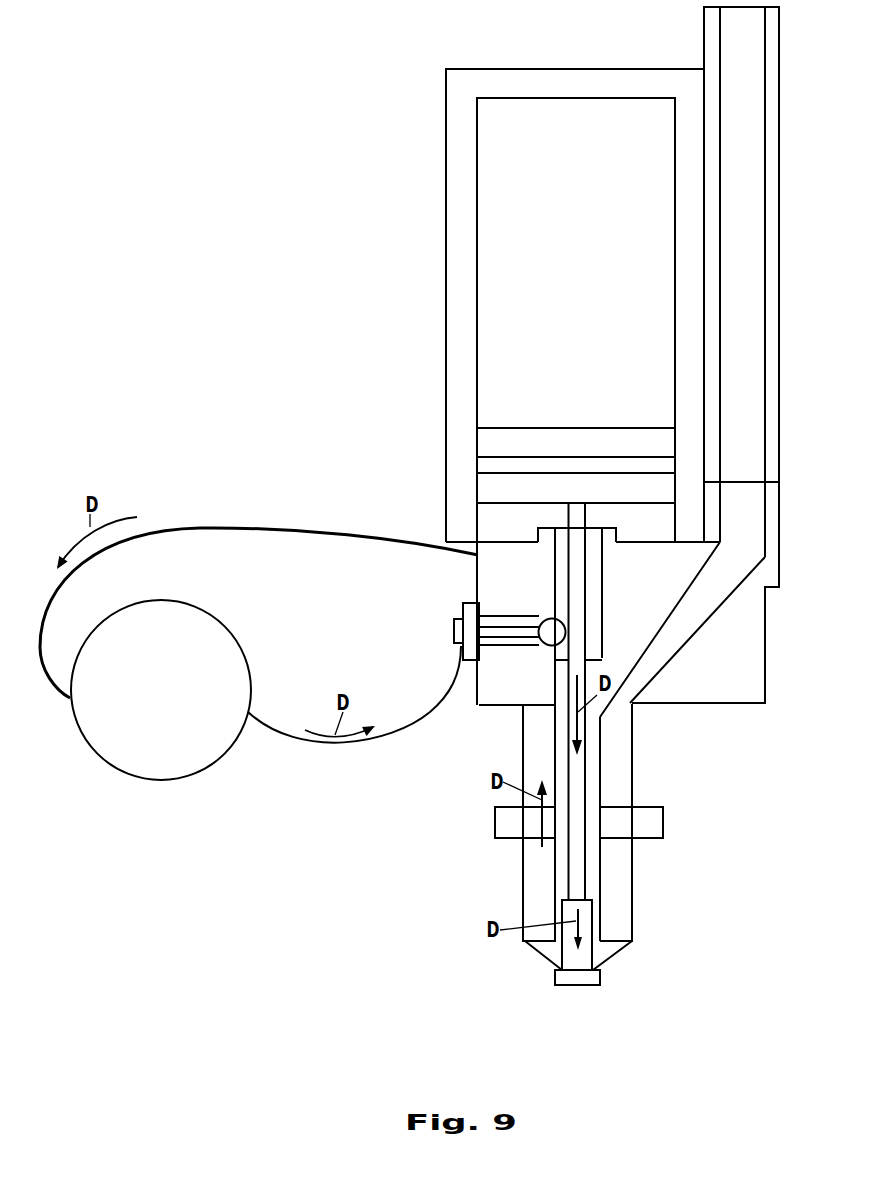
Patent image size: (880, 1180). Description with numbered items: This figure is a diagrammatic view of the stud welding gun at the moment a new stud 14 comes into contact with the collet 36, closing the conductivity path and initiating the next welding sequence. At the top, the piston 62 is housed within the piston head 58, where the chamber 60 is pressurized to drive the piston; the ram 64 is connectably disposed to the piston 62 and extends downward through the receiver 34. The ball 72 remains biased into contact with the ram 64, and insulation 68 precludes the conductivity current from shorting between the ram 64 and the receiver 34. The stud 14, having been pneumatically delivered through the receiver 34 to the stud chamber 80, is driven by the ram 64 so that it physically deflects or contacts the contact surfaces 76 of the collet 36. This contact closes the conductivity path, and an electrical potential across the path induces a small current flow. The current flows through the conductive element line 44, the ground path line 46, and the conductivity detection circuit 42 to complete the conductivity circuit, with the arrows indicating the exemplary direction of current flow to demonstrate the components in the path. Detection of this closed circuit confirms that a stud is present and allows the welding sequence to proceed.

The stud 14 is at (582, 953).
The receiver 34 is at (732, 680).
The collet 36 is at (537, 887).
The conductivity detection circuit 42 is at (119, 745).
The conductive element line 44 is at (346, 750).
The ground path line 46 is at (172, 527).
The piston head 58 is at (446, 153).
The chamber 60 is at (489, 253).
The piston 62 is at (504, 443).
The ram 64 is at (578, 763).
The insulation 68 is at (558, 652).
The ball 72 is at (547, 638).
The contact surfaces 76 is at (673, 977).
The stud chamber 80 is at (598, 857).